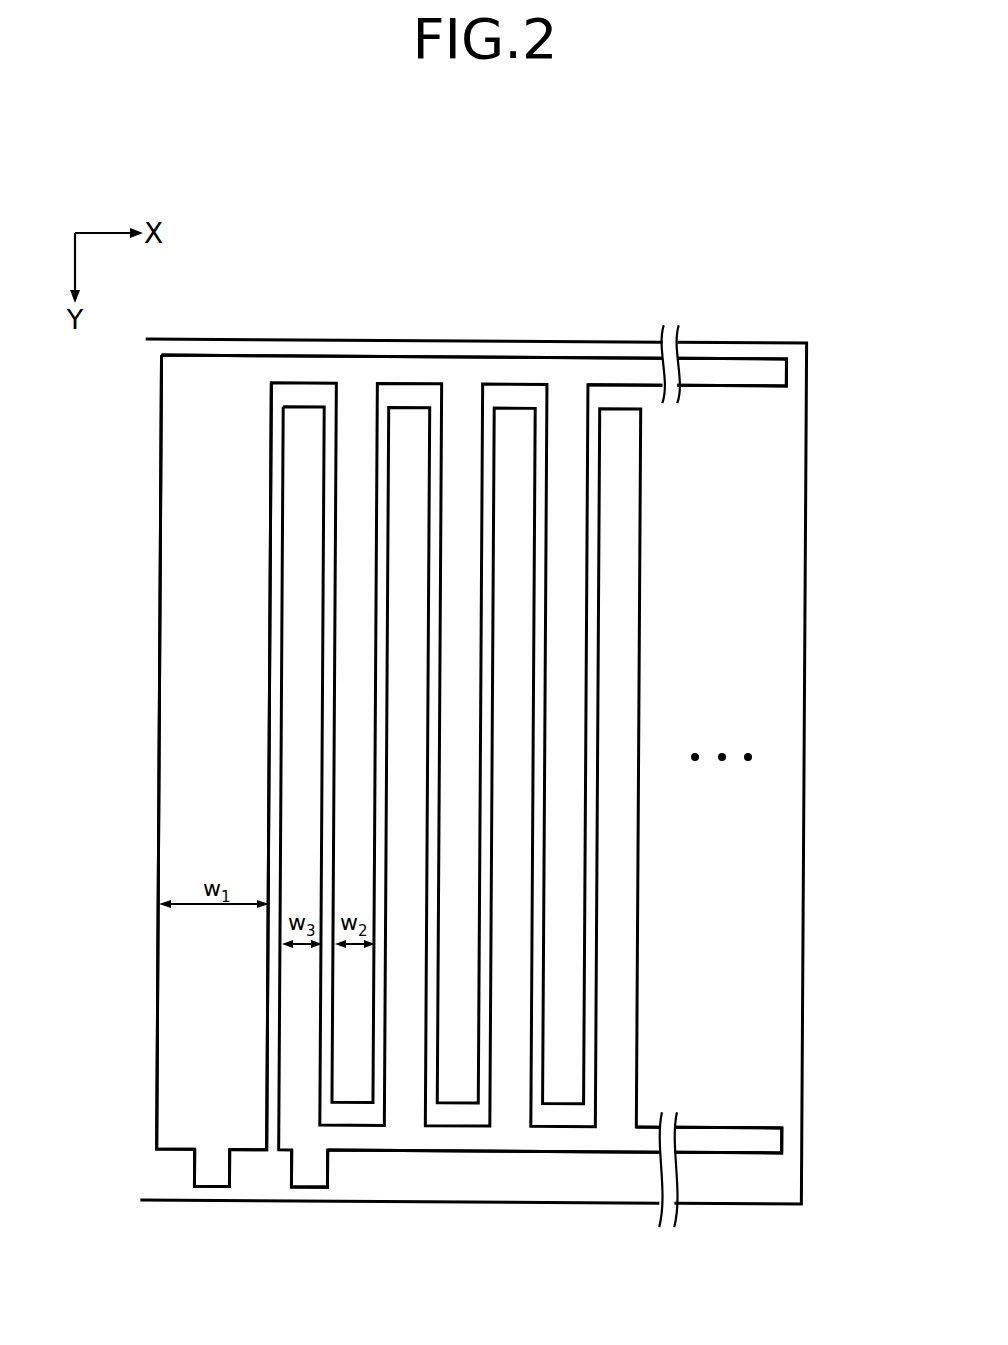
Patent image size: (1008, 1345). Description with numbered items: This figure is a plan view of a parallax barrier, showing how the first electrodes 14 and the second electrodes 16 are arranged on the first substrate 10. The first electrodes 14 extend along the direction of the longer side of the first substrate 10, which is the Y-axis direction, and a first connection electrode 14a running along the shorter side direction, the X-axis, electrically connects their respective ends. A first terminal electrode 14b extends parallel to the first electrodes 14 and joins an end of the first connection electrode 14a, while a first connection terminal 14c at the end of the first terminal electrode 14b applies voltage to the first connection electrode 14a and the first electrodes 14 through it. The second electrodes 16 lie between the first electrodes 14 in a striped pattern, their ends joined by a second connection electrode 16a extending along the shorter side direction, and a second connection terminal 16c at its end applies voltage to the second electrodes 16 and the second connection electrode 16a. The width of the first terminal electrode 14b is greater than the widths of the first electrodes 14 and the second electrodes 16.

The first substrate 10 is at (803, 758).
The first electrodes 14 is at (358, 715).
The first connection electrode 14a is at (742, 373).
The first terminal electrode 14b is at (213, 630).
The first connection terminal 14c is at (215, 1170).
The second electrodes 16 is at (303, 797).
The second connection electrode 16a is at (742, 1140).
The second connection terminal 16c is at (312, 1170).